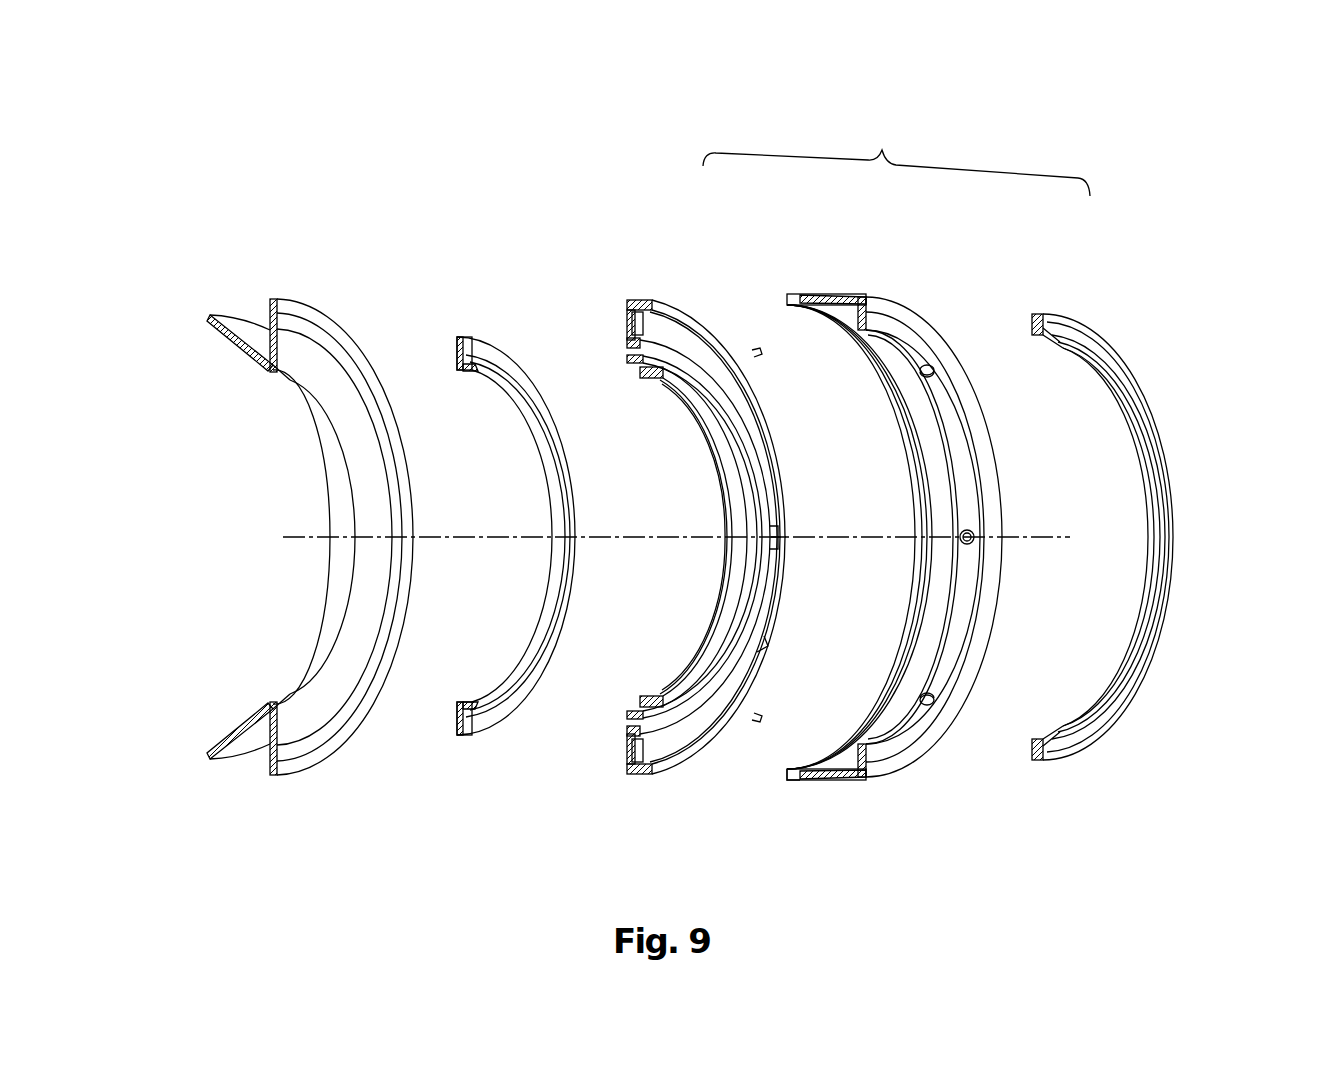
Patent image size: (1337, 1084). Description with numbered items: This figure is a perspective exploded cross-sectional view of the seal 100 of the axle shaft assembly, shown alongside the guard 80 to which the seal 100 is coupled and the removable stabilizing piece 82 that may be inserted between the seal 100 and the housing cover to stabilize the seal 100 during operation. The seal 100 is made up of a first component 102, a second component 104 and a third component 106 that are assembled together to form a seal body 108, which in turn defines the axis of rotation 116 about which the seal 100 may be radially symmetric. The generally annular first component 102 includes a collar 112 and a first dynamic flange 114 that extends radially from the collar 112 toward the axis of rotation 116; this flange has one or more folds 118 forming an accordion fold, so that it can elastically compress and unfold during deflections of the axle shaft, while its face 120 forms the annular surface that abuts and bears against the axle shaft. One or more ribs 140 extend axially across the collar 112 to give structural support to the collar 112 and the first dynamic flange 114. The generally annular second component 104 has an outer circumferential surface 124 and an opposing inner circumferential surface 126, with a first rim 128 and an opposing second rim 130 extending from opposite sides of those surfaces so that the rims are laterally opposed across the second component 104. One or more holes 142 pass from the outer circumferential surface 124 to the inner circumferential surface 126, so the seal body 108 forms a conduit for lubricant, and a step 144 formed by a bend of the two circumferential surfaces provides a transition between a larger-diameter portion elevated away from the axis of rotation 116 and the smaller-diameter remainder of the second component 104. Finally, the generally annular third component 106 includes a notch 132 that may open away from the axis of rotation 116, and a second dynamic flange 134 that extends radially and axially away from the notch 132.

The guard 80 is at (346, 416).
The removable stabilizing piece 82 is at (472, 302).
The seal 100 is at (464, 163).
The first component 102 is at (691, 507).
The second component 104 is at (905, 539).
The third component 106 is at (1162, 538).
The seal body 108 is at (896, 156).
The collar 112 is at (645, 300).
The first dynamic flange 114 is at (635, 718).
The axis of rotation 116 is at (640, 535).
The folds 118 is at (630, 713).
The face 120 is at (735, 573).
The outer circumferential surface 124 is at (845, 775).
The inner circumferential surface 126 is at (860, 746).
The first rim 128 is at (880, 755).
The second rim 130 is at (790, 773).
The notch 132 is at (1040, 765).
The second dynamic flange 134 is at (1160, 430).
The ribs 140 is at (760, 646).
The holes 142 is at (940, 398).
The step 144 is at (810, 293).